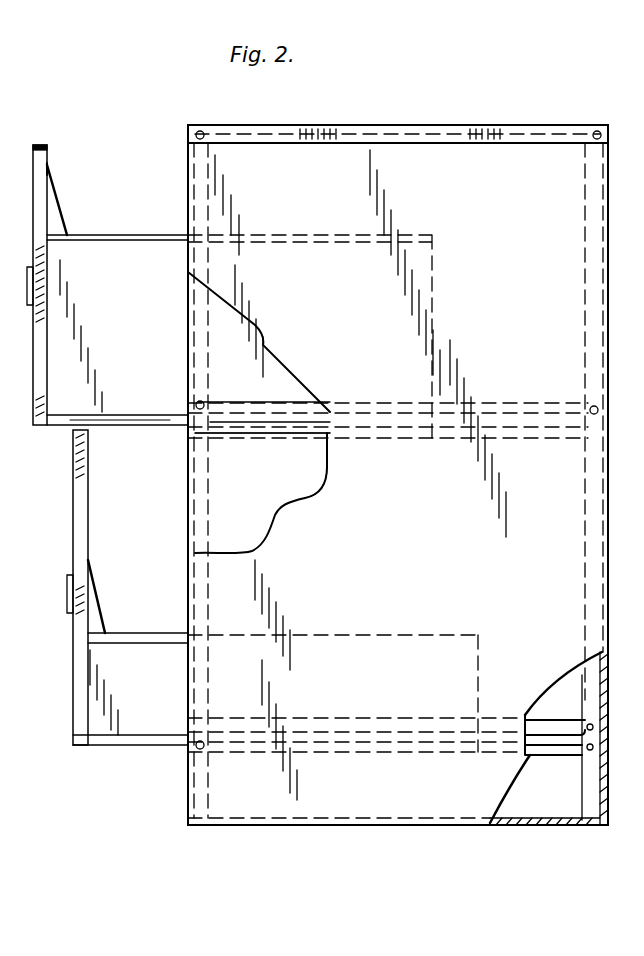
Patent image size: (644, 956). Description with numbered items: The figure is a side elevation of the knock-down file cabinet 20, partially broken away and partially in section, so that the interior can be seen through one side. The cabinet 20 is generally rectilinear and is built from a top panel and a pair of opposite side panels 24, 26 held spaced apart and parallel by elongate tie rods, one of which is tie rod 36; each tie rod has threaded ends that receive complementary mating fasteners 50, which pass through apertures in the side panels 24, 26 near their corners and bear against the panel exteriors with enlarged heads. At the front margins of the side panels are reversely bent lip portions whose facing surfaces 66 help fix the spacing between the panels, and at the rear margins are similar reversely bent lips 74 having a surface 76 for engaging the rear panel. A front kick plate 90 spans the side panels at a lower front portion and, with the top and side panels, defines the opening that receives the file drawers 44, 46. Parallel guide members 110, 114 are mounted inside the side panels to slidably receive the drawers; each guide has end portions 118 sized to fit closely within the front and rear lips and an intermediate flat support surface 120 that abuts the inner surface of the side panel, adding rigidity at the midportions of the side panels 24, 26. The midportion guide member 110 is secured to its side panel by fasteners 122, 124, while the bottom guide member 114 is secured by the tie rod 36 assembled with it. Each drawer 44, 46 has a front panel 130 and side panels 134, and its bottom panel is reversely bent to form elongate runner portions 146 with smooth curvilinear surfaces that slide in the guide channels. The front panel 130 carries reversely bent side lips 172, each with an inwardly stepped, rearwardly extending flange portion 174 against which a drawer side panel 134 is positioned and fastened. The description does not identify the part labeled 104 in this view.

The file cabinet 20 is at (160, 780).
The side panel 24 is at (503, 806).
The side panel 26 is at (415, 528).
The tie rod 36 is at (587, 748).
The file drawer 44 is at (88, 535).
The file drawer 46 is at (44, 140).
The mating fastener 50 is at (200, 128).
The facing surface of side panel lip portion 66 is at (200, 516).
The reversely bent lip 74 is at (610, 586).
The surface of lip 76 is at (585, 672).
The front kick plate 90 is at (186, 808).
The bottom edge 104 is at (497, 830).
The guide member 110 is at (279, 435).
The guide member 114 is at (532, 760).
The end portion 118 is at (205, 435).
The flat support surface 120 is at (527, 716).
The fastener 122 is at (592, 405).
The fastener 124 is at (203, 408).
The front panel 130 is at (73, 516).
The side panel 134 is at (135, 300).
The runner portion 146 is at (145, 415).
The reversely bent side lip 172 is at (48, 170).
The flange portion 174 is at (61, 204).